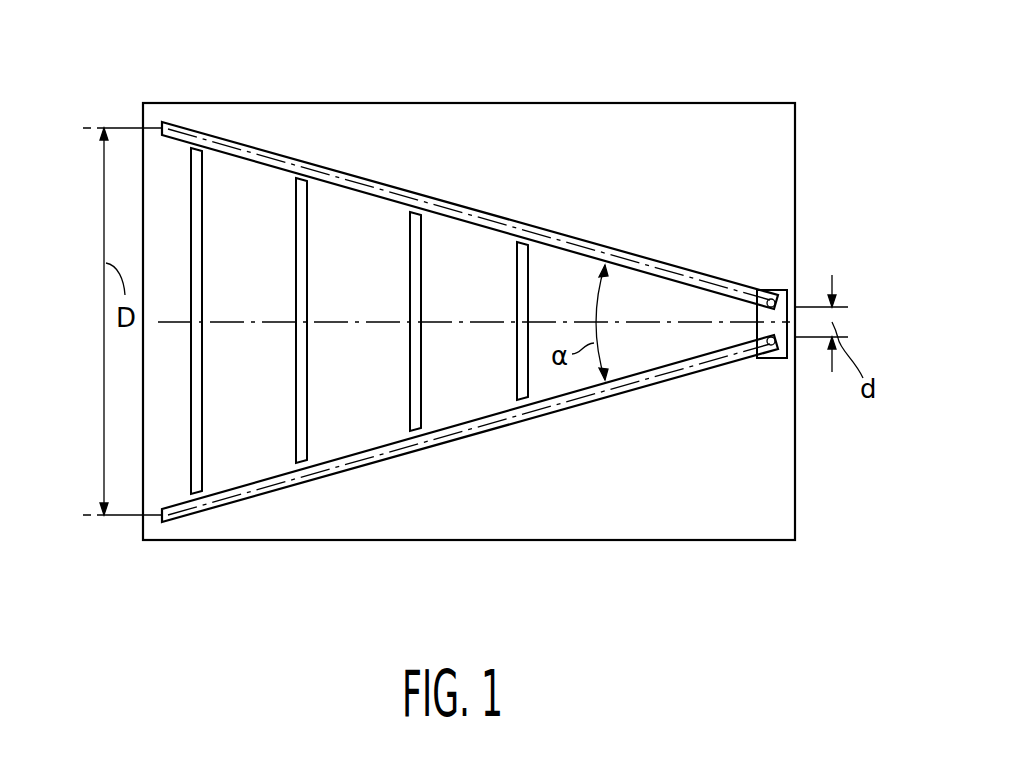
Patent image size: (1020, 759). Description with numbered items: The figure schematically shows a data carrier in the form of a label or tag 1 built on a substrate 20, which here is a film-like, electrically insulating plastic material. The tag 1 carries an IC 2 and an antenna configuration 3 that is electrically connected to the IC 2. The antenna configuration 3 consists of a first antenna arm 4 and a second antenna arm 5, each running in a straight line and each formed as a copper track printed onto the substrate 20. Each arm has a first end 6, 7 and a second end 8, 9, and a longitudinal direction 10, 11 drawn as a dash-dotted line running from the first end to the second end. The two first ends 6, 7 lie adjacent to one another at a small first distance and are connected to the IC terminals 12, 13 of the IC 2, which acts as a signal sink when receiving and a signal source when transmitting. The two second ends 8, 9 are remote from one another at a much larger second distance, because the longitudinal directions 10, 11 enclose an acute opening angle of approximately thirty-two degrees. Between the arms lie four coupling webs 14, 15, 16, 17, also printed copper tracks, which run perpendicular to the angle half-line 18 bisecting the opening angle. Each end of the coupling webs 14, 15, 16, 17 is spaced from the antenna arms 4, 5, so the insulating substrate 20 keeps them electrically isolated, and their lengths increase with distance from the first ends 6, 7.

The tag 1 is at (737, 97).
The IC 2 is at (774, 290).
The antenna configuration 3 is at (627, 233).
The first antenna arm 4 is at (336, 175).
The second antenna arm 5 is at (440, 448).
The first end 6 is at (778, 298).
The first end 7 is at (779, 350).
The second end 8 is at (163, 130).
The second end 9 is at (163, 514).
The longitudinal direction 10 is at (458, 213).
The longitudinal direction 11 is at (490, 420).
The IC terminal 12 is at (763, 290).
The IC terminal 13 is at (763, 358).
The coupling web 14 is at (526, 302).
The coupling web 15 is at (419, 301).
The coupling web 16 is at (307, 290).
The coupling web 17 is at (197, 300).
The angle half-line 18 is at (228, 323).
The substrate 20 is at (553, 118).